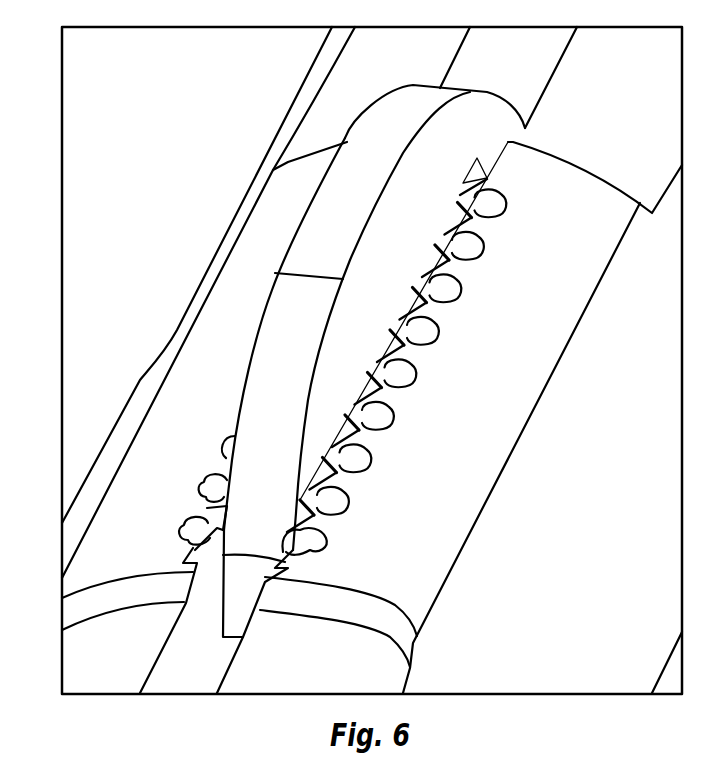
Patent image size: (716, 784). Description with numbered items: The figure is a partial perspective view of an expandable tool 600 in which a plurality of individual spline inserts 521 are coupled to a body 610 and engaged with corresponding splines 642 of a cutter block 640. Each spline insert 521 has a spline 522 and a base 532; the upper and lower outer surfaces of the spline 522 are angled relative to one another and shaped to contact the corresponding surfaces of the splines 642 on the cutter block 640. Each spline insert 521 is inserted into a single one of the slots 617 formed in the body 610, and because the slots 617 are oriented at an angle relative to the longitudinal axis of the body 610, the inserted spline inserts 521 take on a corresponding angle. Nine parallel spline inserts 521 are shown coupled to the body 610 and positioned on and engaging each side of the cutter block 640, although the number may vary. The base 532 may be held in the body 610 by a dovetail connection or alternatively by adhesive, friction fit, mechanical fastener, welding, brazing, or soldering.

The expandable tool 600 is at (214, 82).
The body 610 is at (528, 317).
The cutter block 640 is at (343, 236).
The splines 642 is at (335, 478).
The spline 522 is at (370, 393).
The base 532 is at (362, 412).
The spline insert 521 is at (183, 533).
The slots 617 is at (190, 543).